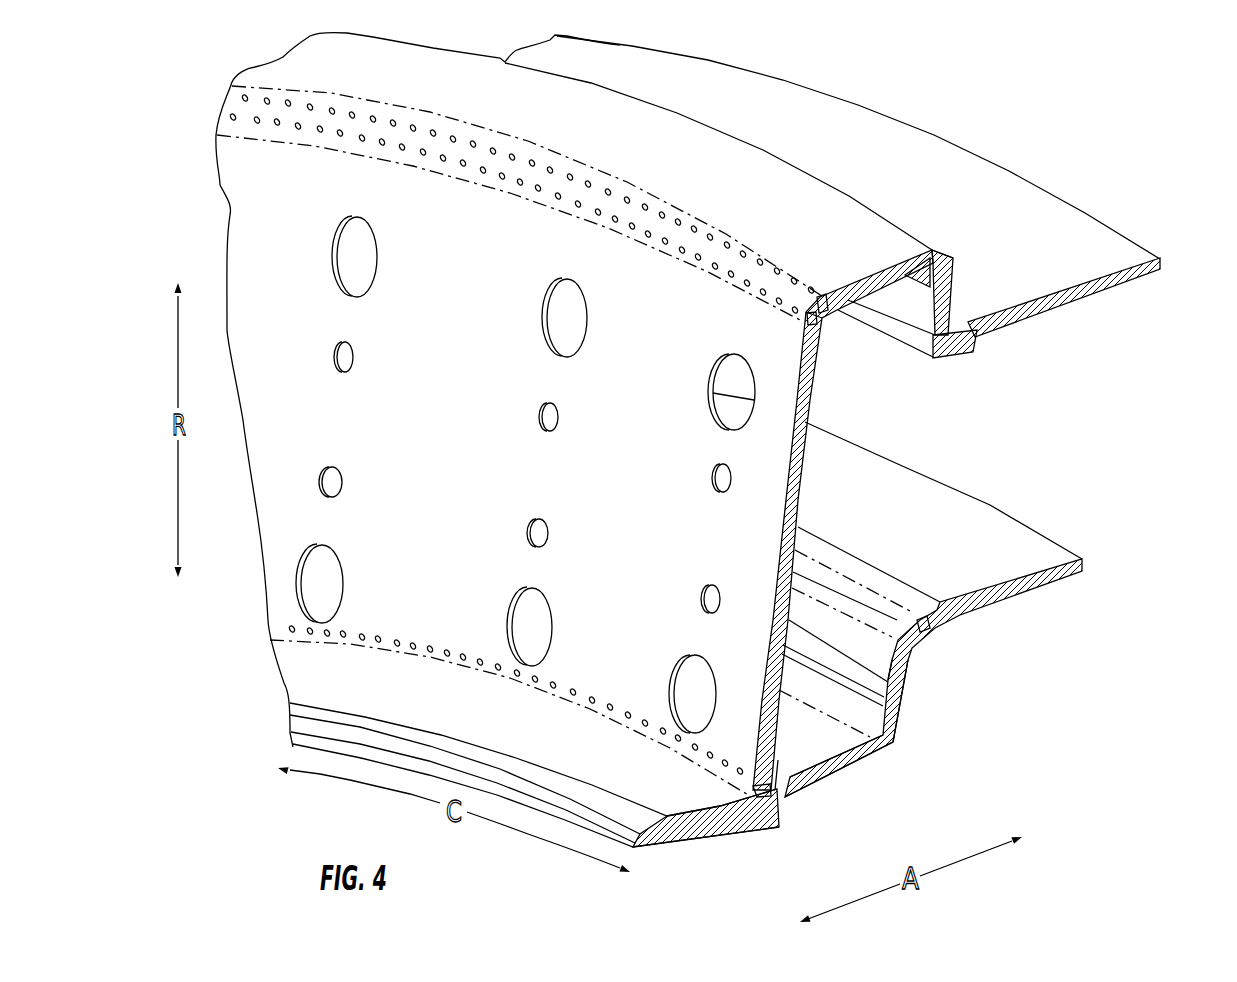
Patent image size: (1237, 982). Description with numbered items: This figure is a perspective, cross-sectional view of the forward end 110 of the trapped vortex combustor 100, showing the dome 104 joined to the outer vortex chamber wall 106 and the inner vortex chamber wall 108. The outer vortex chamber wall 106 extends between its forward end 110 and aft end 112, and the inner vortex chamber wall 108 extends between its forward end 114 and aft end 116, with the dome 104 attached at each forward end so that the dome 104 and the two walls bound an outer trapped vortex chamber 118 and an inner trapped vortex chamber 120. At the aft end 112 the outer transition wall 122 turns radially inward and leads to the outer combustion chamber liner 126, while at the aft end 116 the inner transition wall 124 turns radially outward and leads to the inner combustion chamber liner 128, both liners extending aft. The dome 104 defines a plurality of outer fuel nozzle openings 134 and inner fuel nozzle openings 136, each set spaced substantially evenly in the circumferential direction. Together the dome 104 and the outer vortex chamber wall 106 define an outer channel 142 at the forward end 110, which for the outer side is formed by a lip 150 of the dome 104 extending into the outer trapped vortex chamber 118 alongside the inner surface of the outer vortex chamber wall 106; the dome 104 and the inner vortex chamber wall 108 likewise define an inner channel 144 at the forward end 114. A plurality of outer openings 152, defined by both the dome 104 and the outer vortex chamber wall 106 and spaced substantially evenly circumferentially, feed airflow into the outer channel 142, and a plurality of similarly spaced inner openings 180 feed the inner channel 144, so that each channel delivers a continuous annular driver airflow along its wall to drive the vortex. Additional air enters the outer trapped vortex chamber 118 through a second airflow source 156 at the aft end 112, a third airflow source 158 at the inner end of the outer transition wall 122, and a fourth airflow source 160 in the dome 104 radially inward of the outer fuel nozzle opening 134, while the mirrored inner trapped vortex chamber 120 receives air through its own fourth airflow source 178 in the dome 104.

The trapped vortex combustor 100 is at (893, 50).
The dome 104 is at (645, 465).
The outer vortex chamber wall 106 is at (878, 275).
The inner vortex chamber wall 108 is at (854, 770).
The forward end 110 is at (706, 227).
The aft end 112 is at (854, 196).
The forward end 114 is at (788, 725).
The aft end 116 is at (909, 752).
The outer trapped vortex chamber 118 is at (879, 386).
The inner trapped vortex chamber 120 is at (858, 648).
The outer transition wall 122 is at (955, 266).
The inner transition wall 124 is at (908, 711).
The outer combustion chamber liner 126 is at (1115, 270).
The inner combustion chamber liner 128 is at (1005, 608).
The outer fuel nozzle opening 134 is at (713, 393).
The inner fuel nozzle opening 136 is at (678, 688).
The outer channel 142 is at (855, 298).
The inner channel 144 is at (796, 775).
The lip 150 is at (835, 314).
The outer openings 152 is at (783, 270).
The second airflow source 156 is at (952, 257).
The third airflow source 158 is at (960, 310).
The fourth airflow source 160 is at (728, 488).
The fourth airflow source 178 is at (699, 594).
The inner openings 180 is at (736, 755).